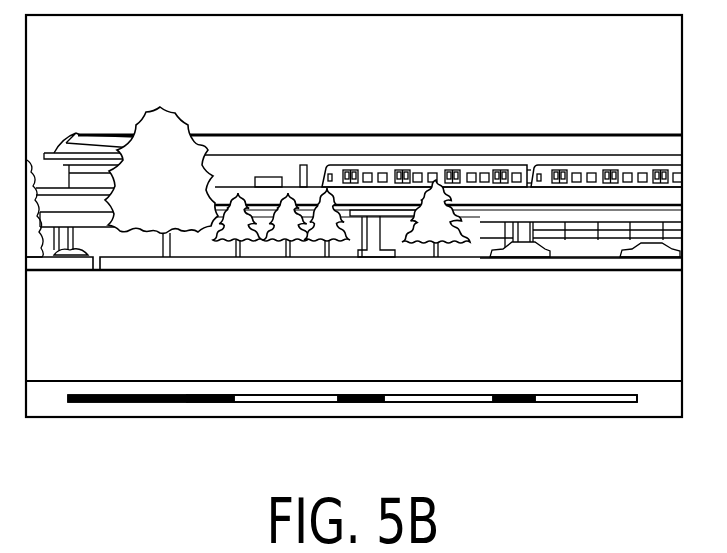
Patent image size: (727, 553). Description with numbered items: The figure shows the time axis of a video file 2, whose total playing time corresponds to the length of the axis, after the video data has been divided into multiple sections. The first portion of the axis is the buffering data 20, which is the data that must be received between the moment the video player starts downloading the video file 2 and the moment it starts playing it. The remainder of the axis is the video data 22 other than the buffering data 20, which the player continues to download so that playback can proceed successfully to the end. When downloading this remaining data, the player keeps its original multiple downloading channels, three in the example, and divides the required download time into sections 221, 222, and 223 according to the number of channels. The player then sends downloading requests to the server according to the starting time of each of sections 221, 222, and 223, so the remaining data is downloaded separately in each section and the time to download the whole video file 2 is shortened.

The video file 2 is at (68, 392).
The buffering data 20 is at (187, 381).
The video data 22 is at (642, 413).
The section 221 is at (187, 381).
The section 222 is at (493, 403).
The section 223 is at (642, 383).